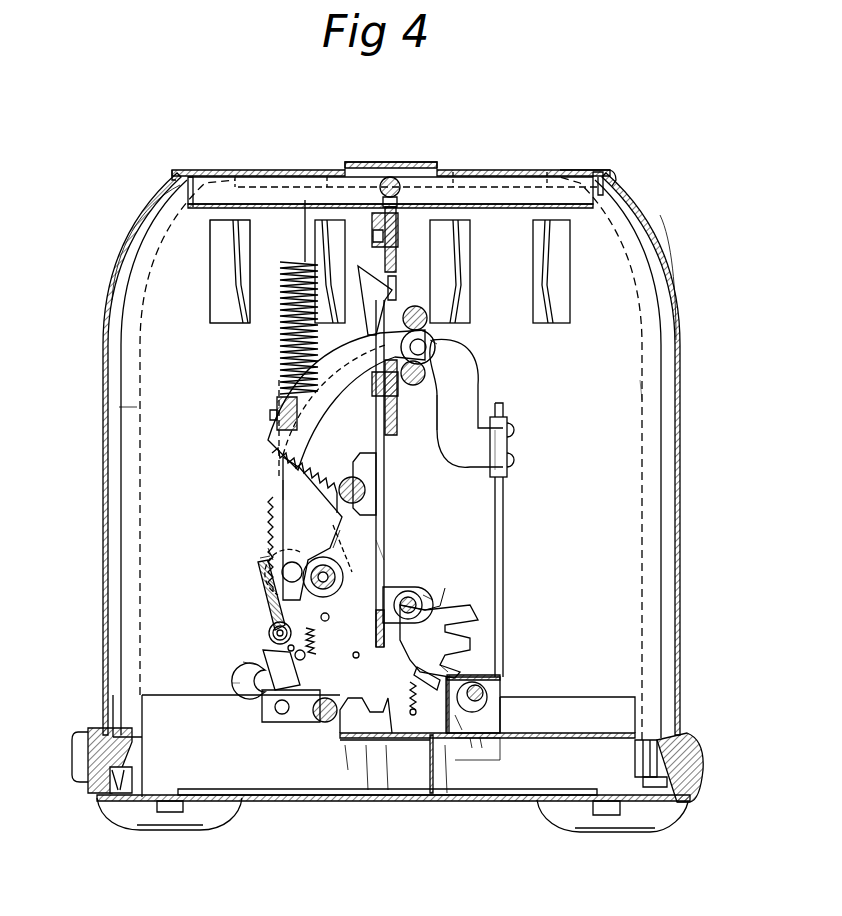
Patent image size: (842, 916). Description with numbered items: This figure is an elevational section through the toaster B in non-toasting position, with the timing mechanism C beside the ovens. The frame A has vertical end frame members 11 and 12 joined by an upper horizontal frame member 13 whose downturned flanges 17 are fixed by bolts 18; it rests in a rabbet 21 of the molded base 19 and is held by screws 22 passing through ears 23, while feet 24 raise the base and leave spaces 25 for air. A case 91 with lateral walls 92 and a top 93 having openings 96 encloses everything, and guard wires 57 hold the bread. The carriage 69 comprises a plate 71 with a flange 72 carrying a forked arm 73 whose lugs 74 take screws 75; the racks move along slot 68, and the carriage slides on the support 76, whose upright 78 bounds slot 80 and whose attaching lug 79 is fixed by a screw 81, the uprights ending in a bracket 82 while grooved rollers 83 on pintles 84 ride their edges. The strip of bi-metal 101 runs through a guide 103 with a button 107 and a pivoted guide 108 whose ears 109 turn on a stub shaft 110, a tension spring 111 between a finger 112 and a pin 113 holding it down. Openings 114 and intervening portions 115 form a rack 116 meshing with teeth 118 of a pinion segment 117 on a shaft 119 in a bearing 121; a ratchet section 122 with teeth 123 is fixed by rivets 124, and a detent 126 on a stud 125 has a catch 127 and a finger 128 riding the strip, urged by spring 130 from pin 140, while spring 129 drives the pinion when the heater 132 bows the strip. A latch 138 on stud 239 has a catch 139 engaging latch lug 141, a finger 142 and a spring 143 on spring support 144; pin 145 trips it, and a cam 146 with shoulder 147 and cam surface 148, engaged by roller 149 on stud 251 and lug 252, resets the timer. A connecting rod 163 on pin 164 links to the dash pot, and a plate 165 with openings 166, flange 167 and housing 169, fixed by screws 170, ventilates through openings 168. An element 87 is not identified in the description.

The vertical end frame member 11 is at (140, 407).
The vertical end frame member 12 is at (540, 392).
The upper horizontal frame member 13 is at (403, 180).
The downturned flange 17 is at (208, 198).
The bolt 18 is at (387, 178).
The base 19 is at (86, 765).
The rabbet 21 is at (82, 747).
The screw 22 is at (678, 805).
The ear 23 is at (703, 760).
The foot 24 is at (180, 822).
The space 25 is at (515, 812).
The guard wire 57 is at (455, 258).
The slot 68 is at (276, 410).
The carriage 69 is at (396, 432).
The plate 71 is at (395, 260).
The flange 72 is at (428, 310).
The forked arm 73 is at (363, 452).
The lug 74 is at (497, 446).
The screw 75 is at (463, 372).
The support 76 is at (394, 588).
The upright 78 is at (430, 425).
The attaching lug 79 is at (428, 578).
The slot 80 is at (385, 496).
The screw 81 is at (440, 586).
The bracket 82 is at (345, 170).
The grooved roller 83 is at (396, 413).
The pintle 84 is at (433, 397).
The rod 87 is at (318, 252).
The case 91 is at (680, 283).
The lateral wall 92 is at (115, 496).
The top 93 is at (578, 172).
The opening 96 is at (275, 170).
The strip of bi-metal 101 is at (560, 732).
The guide 103 is at (313, 795).
The button 107 is at (347, 775).
The guide 108 is at (455, 722).
The ear 109 is at (490, 697).
The stub shaft 110 is at (482, 690).
The tension spring 111 is at (410, 667).
The finger 112 is at (445, 673).
The pin 113 is at (412, 714).
The opening 114 is at (470, 737).
The intervening portion 115 is at (482, 736).
The rack 116 is at (485, 734).
The pinion segment 117 is at (268, 600).
The tooth 118 is at (448, 668).
The shaft 119 is at (352, 566).
The bearing 121 is at (342, 550).
The ratchet section 122 is at (275, 667).
The ratchet tooth 123 is at (258, 690).
The rivet 124 is at (291, 646).
The stud 125 is at (320, 723).
The detent 126 is at (240, 697).
The catch 127 is at (232, 670).
The finger 128 is at (388, 792).
The tension coil spring 129 is at (292, 352).
The tension coil spring 130 is at (283, 718).
The heater 132 is at (368, 792).
The latch 138 is at (271, 459).
The catch 139 is at (381, 453).
The pin 140 is at (332, 614).
The latch lug 141 is at (392, 288).
The finger 142 is at (328, 538).
The tension coil spring 143 is at (277, 488).
The spring support 144 is at (276, 441).
The pin 145 is at (290, 580).
The cam 146 is at (300, 400).
The shoulder 147 is at (266, 553).
The cam surface 148 is at (357, 362).
The roller 149 is at (440, 340).
The connecting rod 163 is at (265, 573).
The pin 164 is at (278, 630).
The plate 165 is at (432, 797).
The opening 166 is at (262, 795).
The flange 167 is at (150, 708).
The opening 168 is at (230, 281).
The housing 169 is at (447, 797).
The screw 170 is at (110, 808).
The stud 239 is at (366, 488).
The stud 251 is at (437, 338).
The lug 252 is at (437, 346).
The frame A is at (130, 243).
The toaster B is at (615, 174).
The timing mechanism C is at (232, 683).